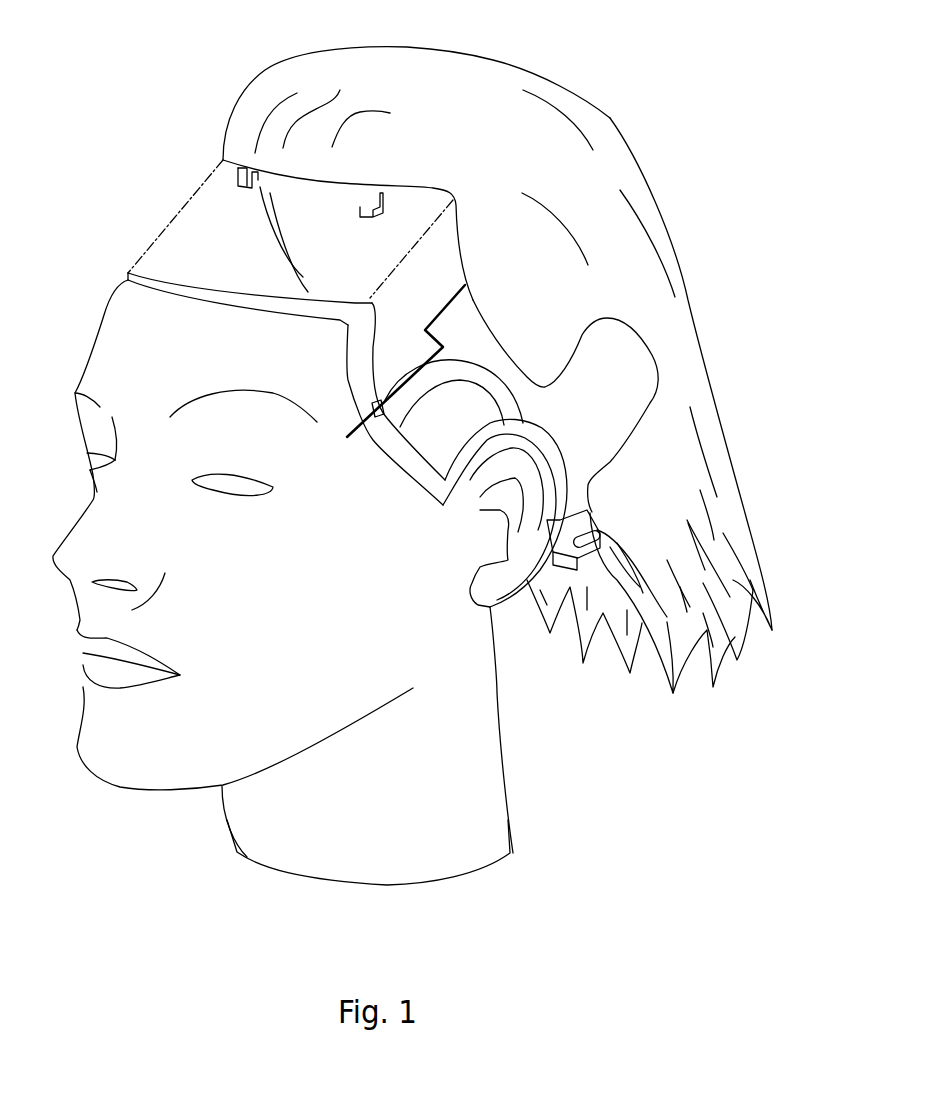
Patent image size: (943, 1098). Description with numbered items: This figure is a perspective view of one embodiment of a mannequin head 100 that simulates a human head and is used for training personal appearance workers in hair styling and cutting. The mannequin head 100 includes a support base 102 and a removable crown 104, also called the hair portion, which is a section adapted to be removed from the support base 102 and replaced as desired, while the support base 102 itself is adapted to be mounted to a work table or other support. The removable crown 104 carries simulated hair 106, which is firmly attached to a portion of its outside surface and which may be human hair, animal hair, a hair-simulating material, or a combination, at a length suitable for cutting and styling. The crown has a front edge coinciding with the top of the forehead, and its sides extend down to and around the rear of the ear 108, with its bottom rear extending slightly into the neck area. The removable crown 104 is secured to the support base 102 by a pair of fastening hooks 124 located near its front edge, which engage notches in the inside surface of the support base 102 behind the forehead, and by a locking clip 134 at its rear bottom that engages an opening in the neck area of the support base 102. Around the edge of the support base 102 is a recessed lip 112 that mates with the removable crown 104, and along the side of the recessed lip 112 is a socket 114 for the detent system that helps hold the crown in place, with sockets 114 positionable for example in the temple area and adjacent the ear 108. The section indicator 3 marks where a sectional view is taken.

The mannequin head 100 is at (122, 137).
The support base 102 is at (117, 789).
The removable crown 104 is at (493, 63).
The simulated hair 106 is at (595, 651).
The ear 108 is at (466, 533).
The recessed lip 112 is at (128, 270).
The socket 114 is at (375, 435).
The fastening hook 124 is at (380, 213).
The locking clip 134 is at (588, 509).
The section line 3 is at (607, 118).